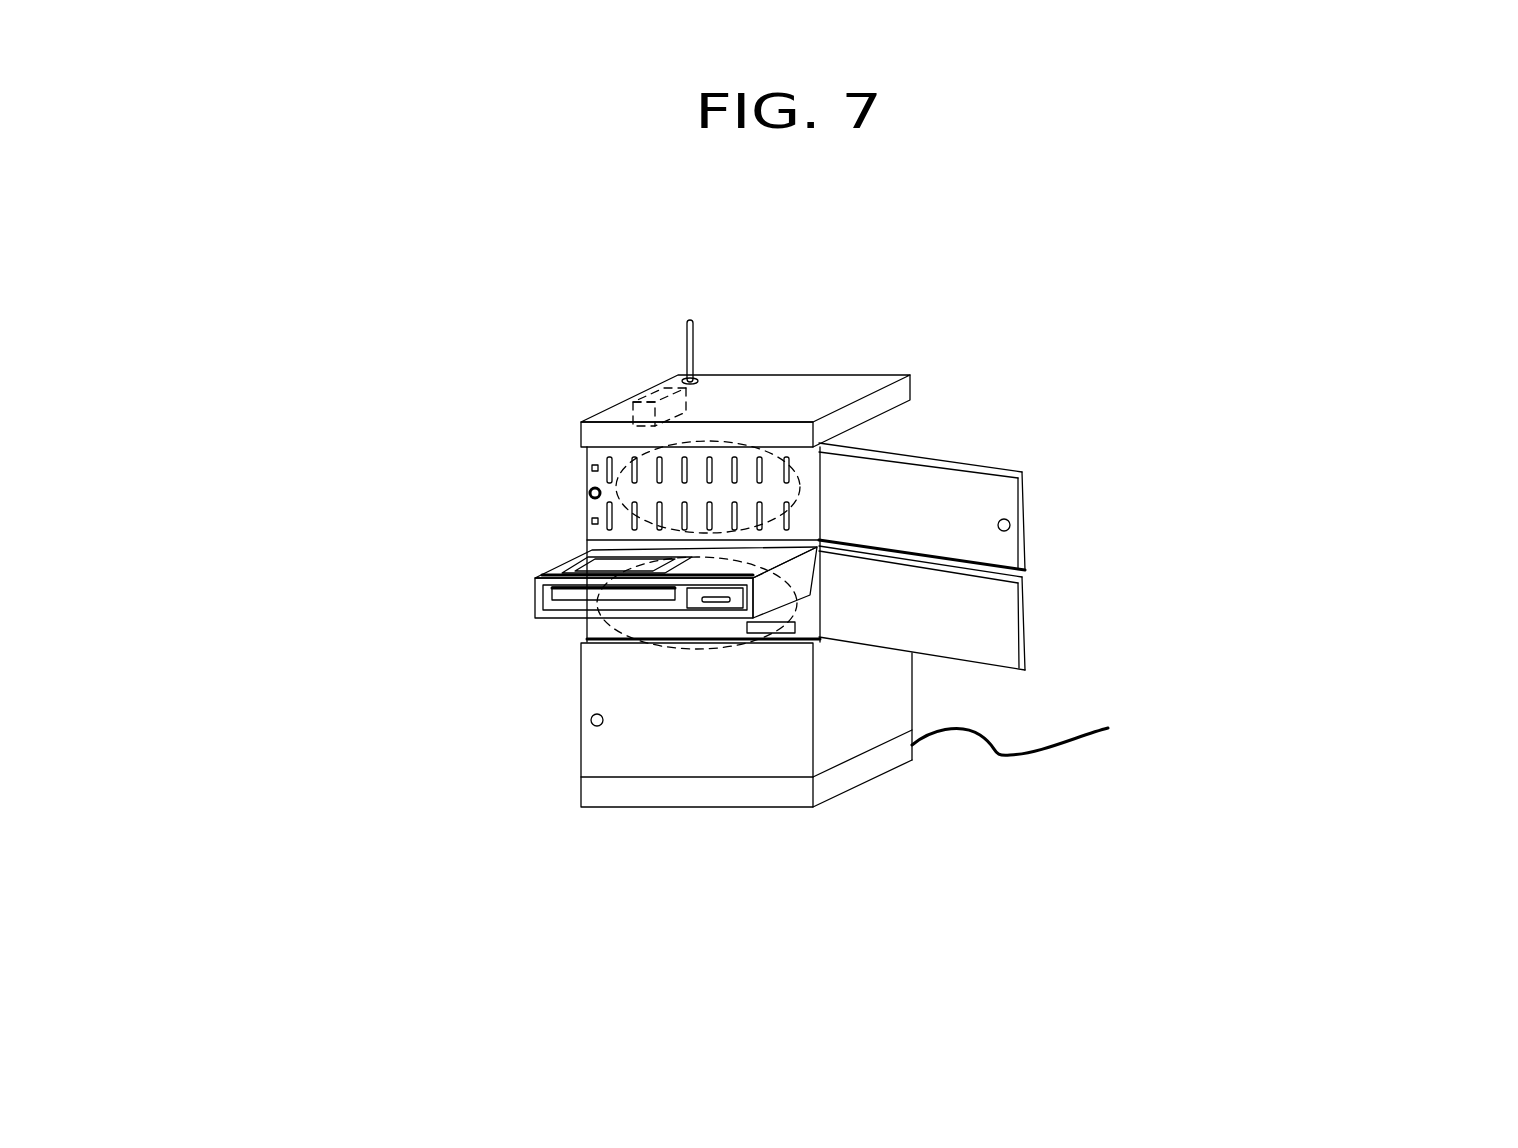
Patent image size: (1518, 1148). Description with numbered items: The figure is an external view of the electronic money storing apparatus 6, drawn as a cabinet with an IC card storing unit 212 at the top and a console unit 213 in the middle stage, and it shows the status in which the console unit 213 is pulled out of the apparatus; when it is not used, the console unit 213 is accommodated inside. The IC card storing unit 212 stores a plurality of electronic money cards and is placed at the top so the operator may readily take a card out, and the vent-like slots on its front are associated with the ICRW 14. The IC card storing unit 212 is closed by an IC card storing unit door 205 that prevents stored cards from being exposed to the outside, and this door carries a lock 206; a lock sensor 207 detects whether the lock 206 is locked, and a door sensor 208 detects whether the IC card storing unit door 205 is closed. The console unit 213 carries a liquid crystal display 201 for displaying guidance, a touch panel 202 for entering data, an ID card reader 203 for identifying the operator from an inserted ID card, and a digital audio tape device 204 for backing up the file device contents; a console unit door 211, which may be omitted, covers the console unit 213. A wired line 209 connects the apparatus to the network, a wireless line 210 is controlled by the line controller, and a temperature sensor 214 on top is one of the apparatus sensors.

The electronic money storing apparatus 6 is at (587, 757).
The ICRW 14 is at (793, 517).
The liquid crystal display 201 is at (585, 557).
The touch panel 202 is at (567, 553).
The ID card reader 203 is at (743, 597).
The digital audio tape device 204 is at (797, 628).
The IC card storing unit door 205 is at (1027, 468).
The lock 206 is at (1010, 524).
The lock sensor 207 is at (588, 491).
The door sensor 208 is at (592, 467).
The wired line 209 is at (1050, 750).
The wireless line 210 is at (695, 340).
The console unit door 211 is at (1027, 595).
The IC card storing unit 212 is at (723, 437).
The console unit 213 is at (587, 623).
The temperature sensor 214 is at (650, 392).